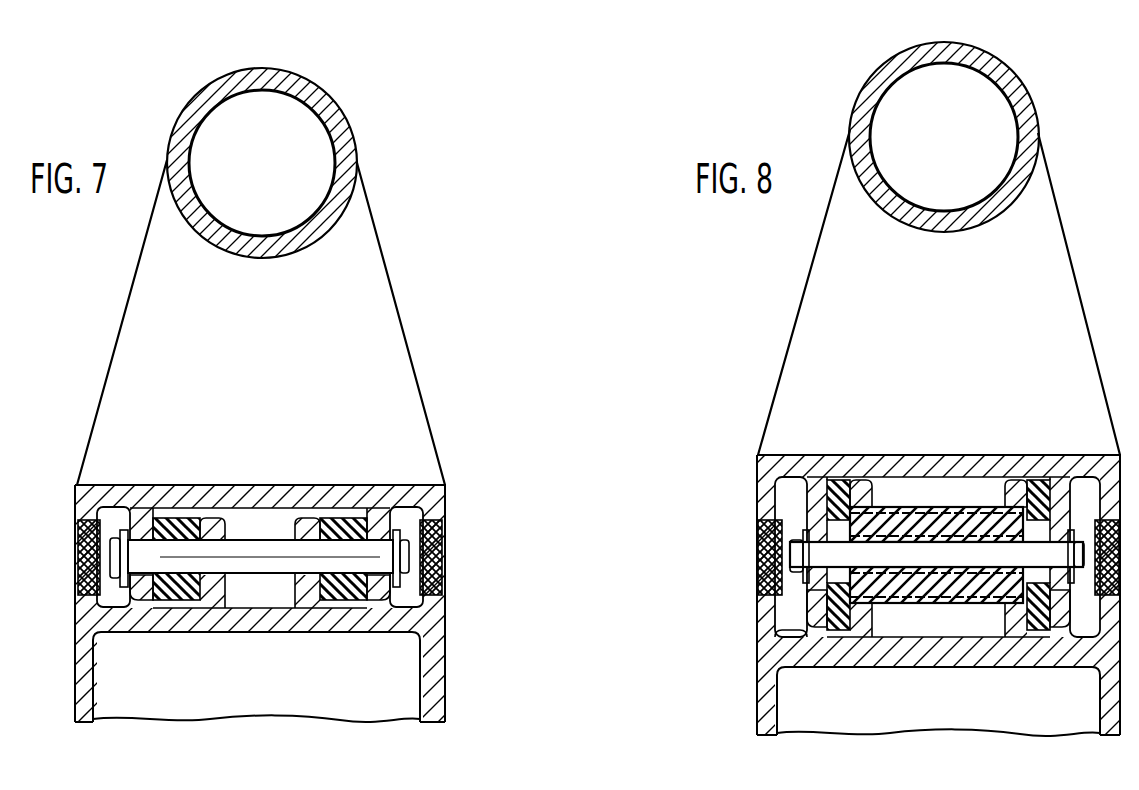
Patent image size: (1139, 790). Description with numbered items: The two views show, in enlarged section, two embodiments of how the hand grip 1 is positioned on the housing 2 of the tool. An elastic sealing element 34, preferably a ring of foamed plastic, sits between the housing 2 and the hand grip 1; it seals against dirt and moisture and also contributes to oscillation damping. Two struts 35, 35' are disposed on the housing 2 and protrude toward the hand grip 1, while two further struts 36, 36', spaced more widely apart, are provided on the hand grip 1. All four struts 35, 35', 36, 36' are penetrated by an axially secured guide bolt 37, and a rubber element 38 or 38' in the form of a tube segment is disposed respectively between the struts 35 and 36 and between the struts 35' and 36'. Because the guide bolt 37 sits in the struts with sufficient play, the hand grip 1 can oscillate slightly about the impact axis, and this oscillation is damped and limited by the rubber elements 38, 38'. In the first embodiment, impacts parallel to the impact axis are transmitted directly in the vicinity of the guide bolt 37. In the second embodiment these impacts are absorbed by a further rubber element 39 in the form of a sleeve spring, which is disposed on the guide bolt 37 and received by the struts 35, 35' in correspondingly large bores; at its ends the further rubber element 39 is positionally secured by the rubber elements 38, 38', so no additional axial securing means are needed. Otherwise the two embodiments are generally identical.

In FIG. 7, the hand grip 1 is at (112, 375).
In FIG. 8, the hand grip 1 is at (797, 363).
In FIG. 7, the housing 2 is at (103, 663).
In FIG. 8, the housing 2 is at (793, 693).
In FIG. 7, the elastic sealing element 34 is at (78, 540).
In FIG. 8, the elastic sealing element 34 is at (757, 540).
In FIG. 7, the strut 35 is at (197, 493).
In FIG. 8, the strut 35 is at (866, 457).
In FIG. 7, the strut 35' is at (311, 493).
In FIG. 8, the strut 35' is at (1018, 457).
In FIG. 7, the strut 36 is at (89, 594).
In FIG. 8, the strut 36 is at (764, 605).
In FIG. 7, the strut 36' is at (363, 626).
In FIG. 8, the strut 36' is at (1050, 645).
In FIG. 7, the guide bolt 37 is at (120, 560).
In FIG. 8, the guide bolt 37 is at (812, 555).
In FIG. 7, the rubber element 38 is at (158, 523).
In FIG. 8, the rubber element 38 is at (829, 518).
In FIG. 7, the rubber element 38' is at (346, 523).
In FIG. 8, the rubber element 38' is at (1053, 518).
In FIG. 8, the further rubber element 39 is at (815, 627).